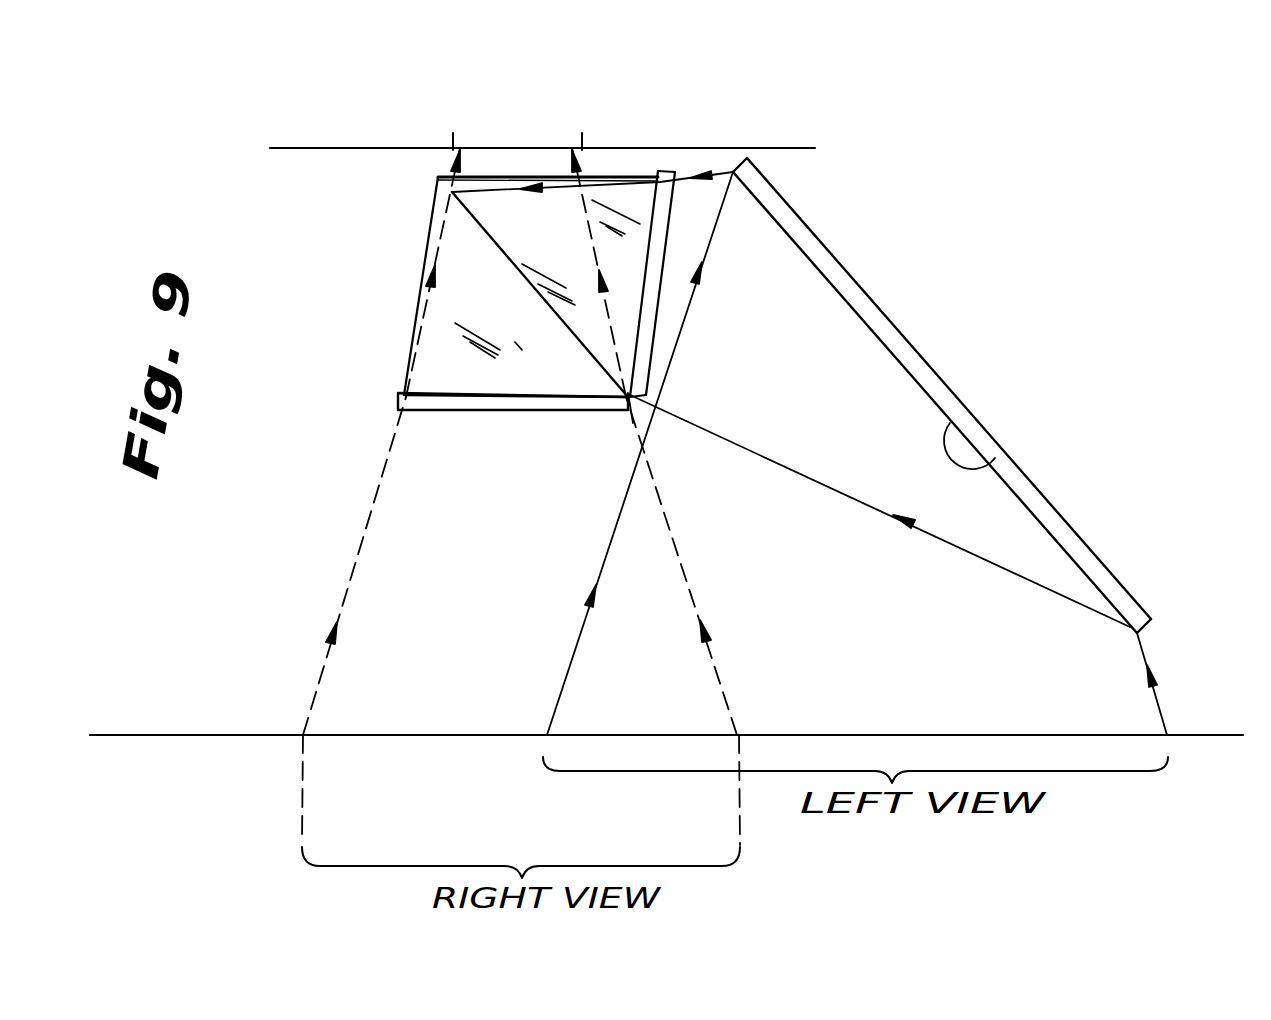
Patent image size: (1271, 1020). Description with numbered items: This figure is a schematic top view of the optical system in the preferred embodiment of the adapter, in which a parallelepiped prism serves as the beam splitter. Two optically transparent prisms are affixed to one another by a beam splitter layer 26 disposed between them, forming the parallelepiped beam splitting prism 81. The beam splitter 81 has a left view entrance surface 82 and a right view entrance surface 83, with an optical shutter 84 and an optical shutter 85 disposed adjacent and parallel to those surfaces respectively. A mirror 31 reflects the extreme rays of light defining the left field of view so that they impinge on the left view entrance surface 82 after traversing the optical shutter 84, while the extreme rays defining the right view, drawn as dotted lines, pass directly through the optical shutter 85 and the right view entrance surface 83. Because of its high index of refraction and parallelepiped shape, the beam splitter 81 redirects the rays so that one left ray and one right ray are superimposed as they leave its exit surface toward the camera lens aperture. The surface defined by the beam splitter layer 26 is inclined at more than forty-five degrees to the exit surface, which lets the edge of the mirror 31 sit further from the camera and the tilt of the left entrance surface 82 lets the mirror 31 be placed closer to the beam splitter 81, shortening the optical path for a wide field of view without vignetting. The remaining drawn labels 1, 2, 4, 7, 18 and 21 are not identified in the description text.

The right light ray 1 is at (1165, 720).
The left-view light path 2 is at (303, 733).
The object plane 4 is at (503, 135).
The right-view light path 7 is at (547, 713).
The prism half 18 is at (547, 279).
The beam splitter interface 21 is at (477, 222).
The beam splitter layer 26 is at (613, 178).
The mirror 31 is at (995, 458).
The parallelepiped beam splitting prism 81 is at (450, 332).
The left view entrance surface 82 is at (645, 305).
The right view entrance surface 83 is at (530, 396).
The optical shutter 84 is at (672, 217).
The optical shutter 85 is at (497, 412).